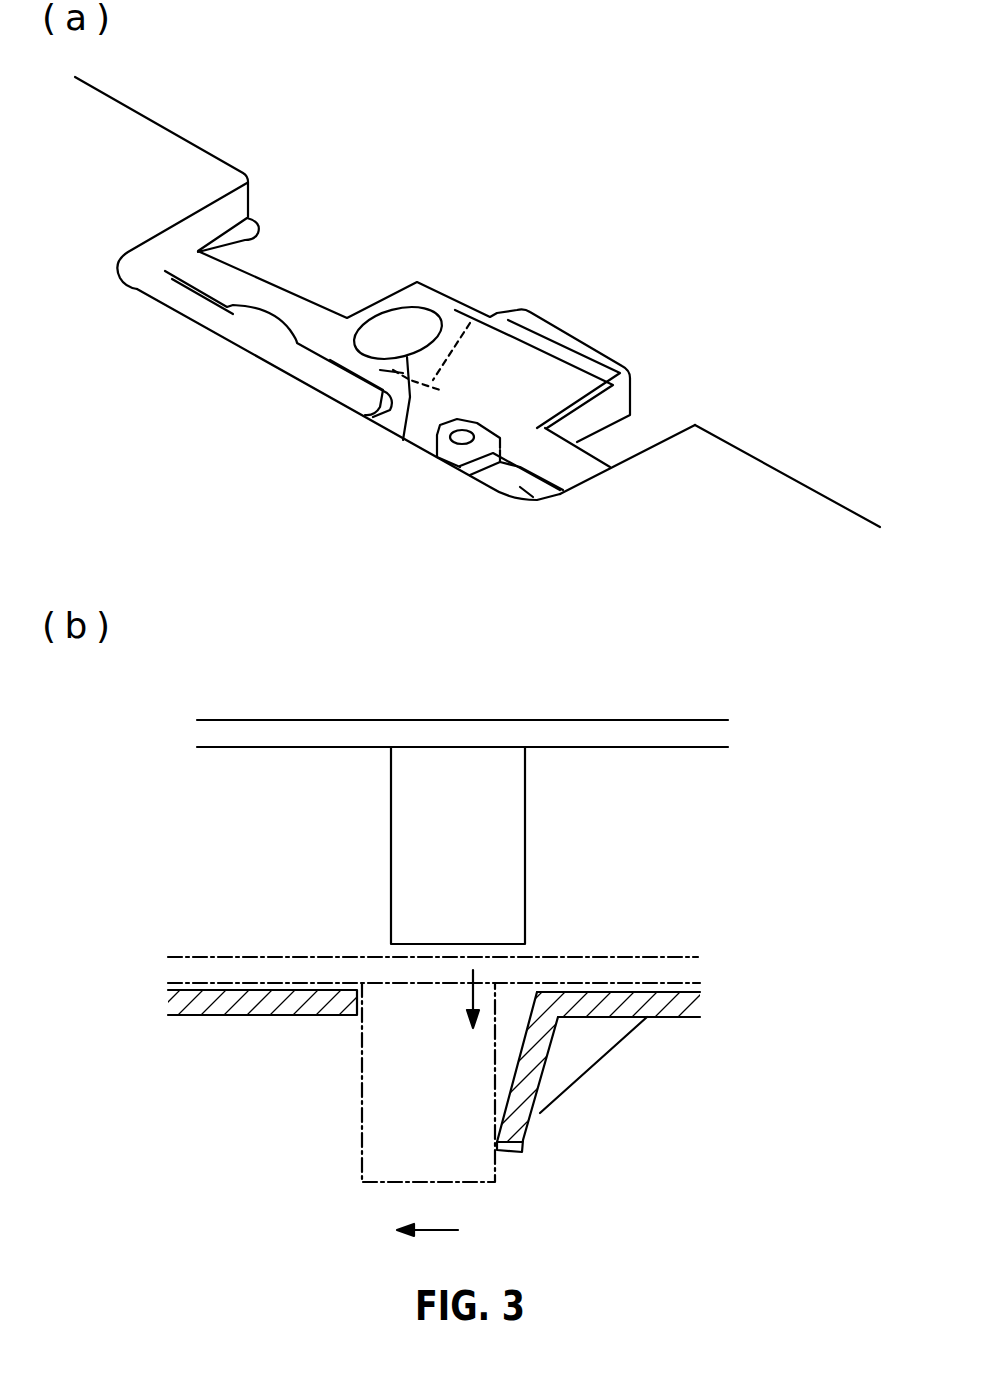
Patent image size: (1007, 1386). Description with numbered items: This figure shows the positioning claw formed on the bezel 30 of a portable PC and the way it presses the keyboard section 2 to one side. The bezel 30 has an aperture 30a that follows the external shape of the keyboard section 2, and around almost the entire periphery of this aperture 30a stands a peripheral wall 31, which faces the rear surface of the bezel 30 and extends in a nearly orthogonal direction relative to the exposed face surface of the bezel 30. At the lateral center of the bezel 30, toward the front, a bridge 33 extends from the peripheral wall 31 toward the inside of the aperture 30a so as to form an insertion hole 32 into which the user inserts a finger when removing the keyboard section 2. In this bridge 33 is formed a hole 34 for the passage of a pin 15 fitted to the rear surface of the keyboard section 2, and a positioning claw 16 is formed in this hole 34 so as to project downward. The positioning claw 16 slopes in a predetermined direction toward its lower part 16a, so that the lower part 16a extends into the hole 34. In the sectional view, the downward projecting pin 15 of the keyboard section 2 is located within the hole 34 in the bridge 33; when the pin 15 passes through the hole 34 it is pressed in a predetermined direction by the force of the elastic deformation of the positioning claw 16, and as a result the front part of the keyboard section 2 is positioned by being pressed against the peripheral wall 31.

The keyboard section 2 is at (638, 728).
The pin 15 is at (500, 805).
The positioning claw 16 is at (405, 345).
The lower part 16a is at (507, 1153).
The bezel 30 is at (810, 507).
The aperture 30a is at (760, 460).
The peripheral wall 31 is at (257, 193).
The insertion hole 32 is at (247, 307).
The bridge 33 is at (322, 303).
The hole 34 is at (405, 355).